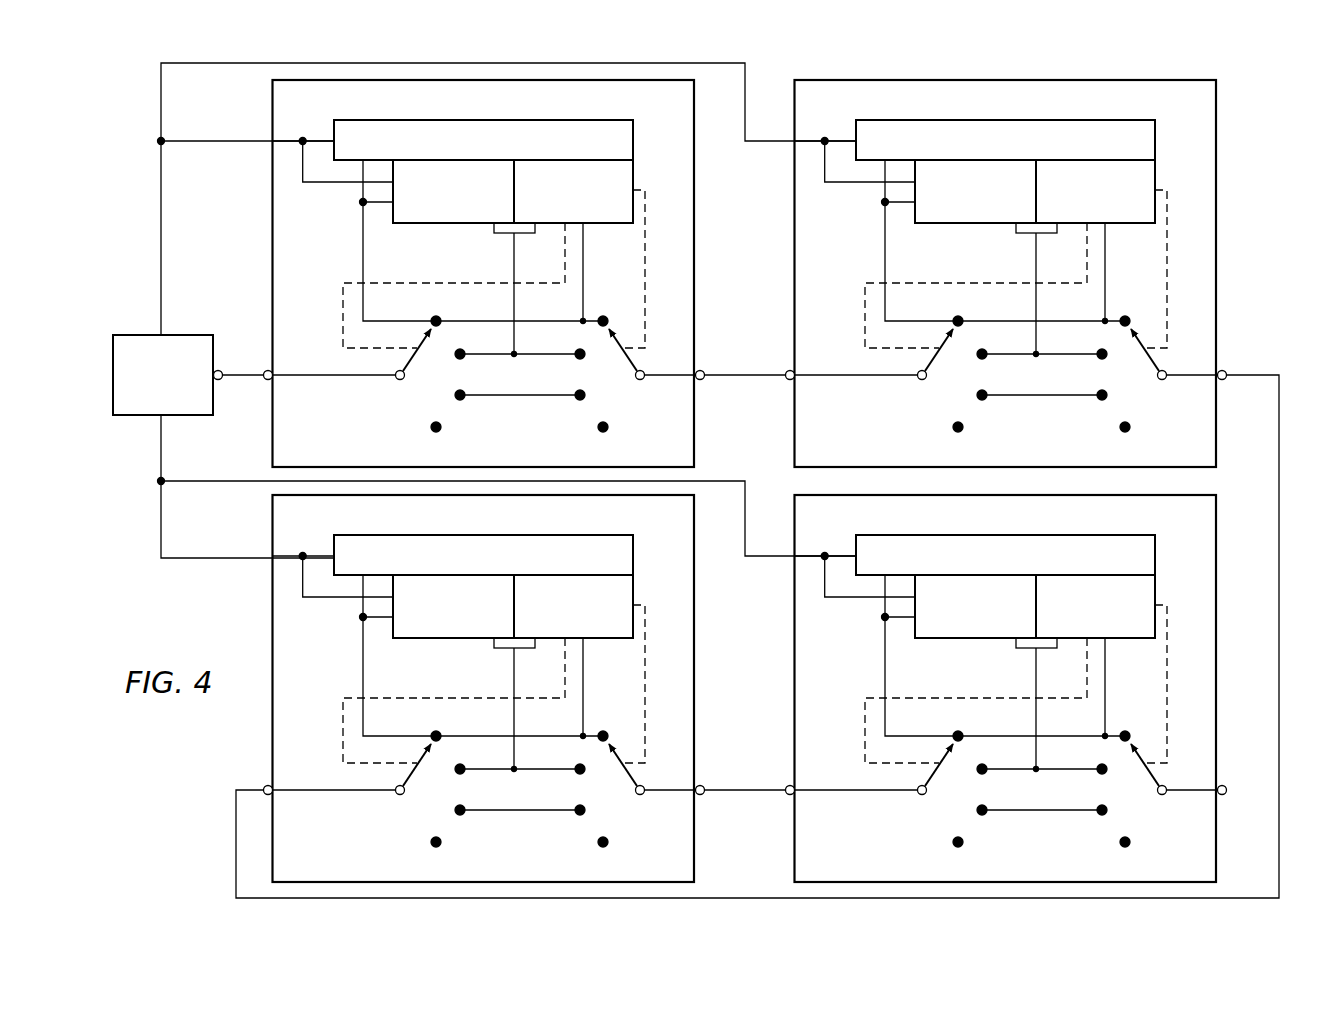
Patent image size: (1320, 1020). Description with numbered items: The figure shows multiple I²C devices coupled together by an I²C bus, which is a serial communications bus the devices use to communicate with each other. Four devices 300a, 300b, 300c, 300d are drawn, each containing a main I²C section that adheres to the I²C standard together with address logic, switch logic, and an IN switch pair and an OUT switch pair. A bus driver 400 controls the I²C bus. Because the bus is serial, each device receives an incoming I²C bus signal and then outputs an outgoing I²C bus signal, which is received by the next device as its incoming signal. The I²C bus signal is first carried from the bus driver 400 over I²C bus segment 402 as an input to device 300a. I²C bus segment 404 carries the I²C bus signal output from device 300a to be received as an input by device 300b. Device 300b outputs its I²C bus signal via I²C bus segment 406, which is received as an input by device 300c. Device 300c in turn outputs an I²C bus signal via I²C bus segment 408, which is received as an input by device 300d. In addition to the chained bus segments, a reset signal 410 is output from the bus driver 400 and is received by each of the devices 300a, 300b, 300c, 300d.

The I²C device 300a is at (700, 220).
The I²C device 300b is at (1220, 164).
The I²C device 300c is at (698, 636).
The I²C device 300d is at (793, 659).
The bus driver 400 is at (140, 335).
The I²C bus segment 402 is at (250, 378).
The I²C bus segment 404 is at (755, 378).
The I²C bus segment 406 is at (236, 847).
The I²C bus segment 408 is at (753, 793).
The reset signal 410 is at (224, 66).